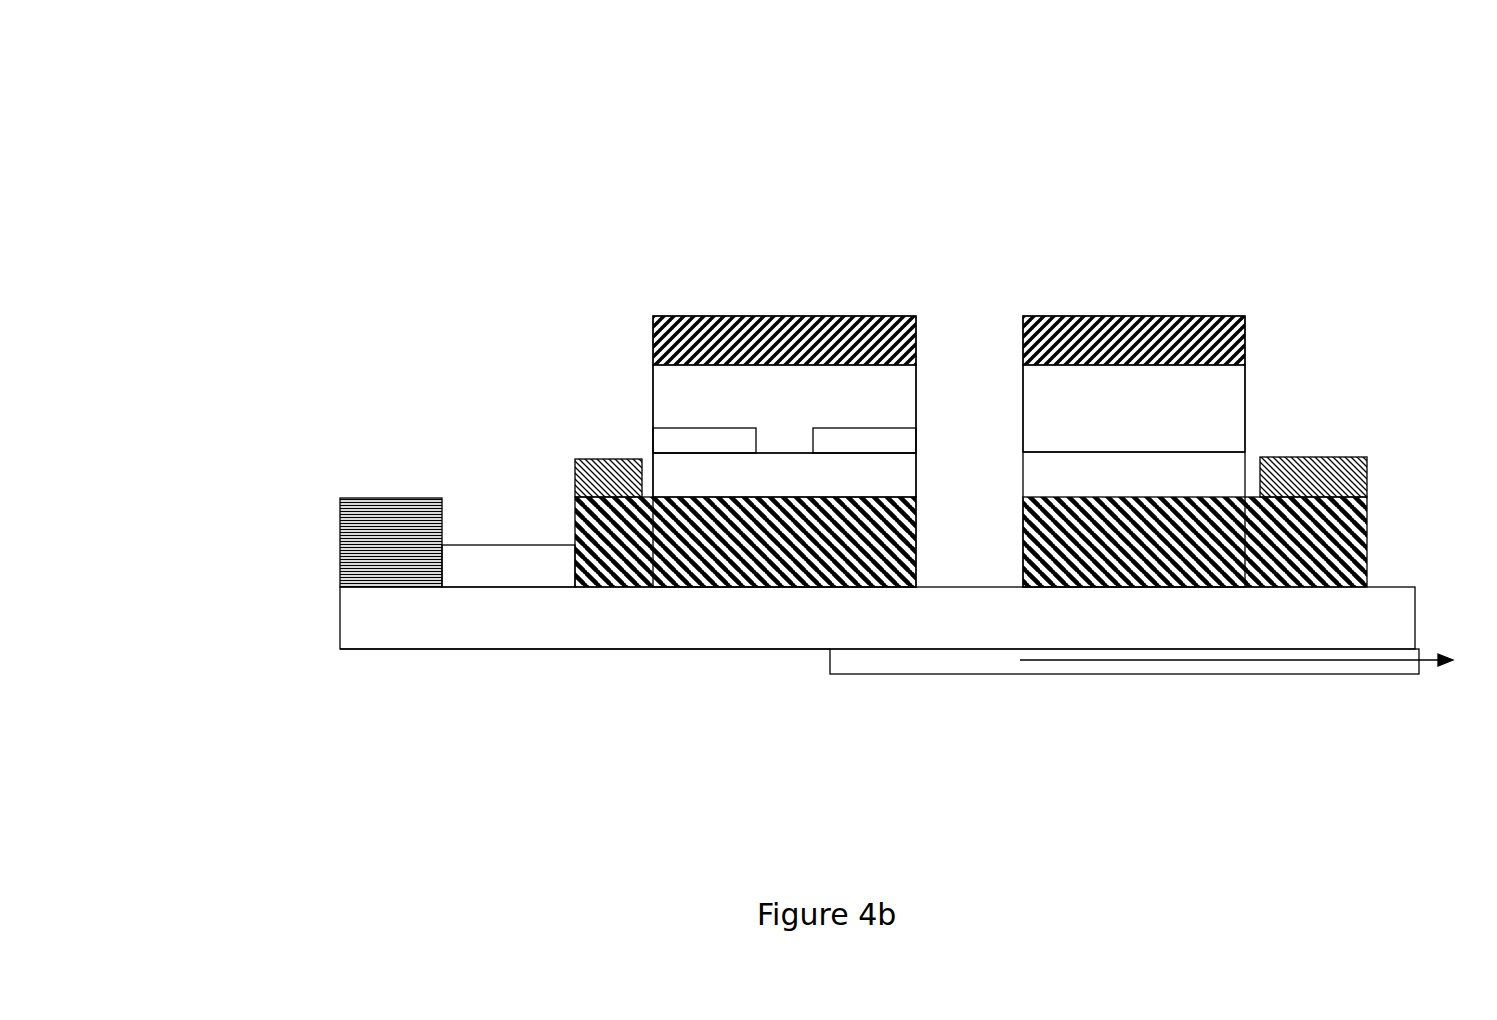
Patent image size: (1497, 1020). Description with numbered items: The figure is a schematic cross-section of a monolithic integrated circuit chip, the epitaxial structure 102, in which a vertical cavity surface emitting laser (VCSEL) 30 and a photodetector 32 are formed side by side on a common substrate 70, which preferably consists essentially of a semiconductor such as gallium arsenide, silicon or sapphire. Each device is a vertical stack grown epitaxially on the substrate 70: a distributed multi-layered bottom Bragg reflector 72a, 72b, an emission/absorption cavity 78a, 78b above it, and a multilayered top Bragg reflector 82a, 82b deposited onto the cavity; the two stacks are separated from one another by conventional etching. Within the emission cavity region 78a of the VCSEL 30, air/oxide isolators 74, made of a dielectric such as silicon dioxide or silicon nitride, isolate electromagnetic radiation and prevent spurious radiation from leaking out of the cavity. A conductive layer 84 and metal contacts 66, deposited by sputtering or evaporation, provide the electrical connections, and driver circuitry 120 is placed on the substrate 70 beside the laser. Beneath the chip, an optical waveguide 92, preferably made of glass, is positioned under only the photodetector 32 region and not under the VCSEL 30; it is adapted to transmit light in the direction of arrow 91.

The vertical cavity surface emitting laser (VCSEL) 30 is at (715, 173).
The photodetector 32 is at (1095, 163).
The contacts 66 is at (563, 463).
The substrate 70 is at (318, 645).
The bottom distributed Bragg reflector 72a is at (570, 530).
The bottom distributed Bragg reflector 72b is at (1373, 527).
The air/oxide isolators 74 is at (808, 442).
The emission cavity region 78a is at (644, 380).
The emission/absorption cavity 78b is at (1268, 392).
The top distributed Bragg reflector 82a is at (643, 317).
The top distributed Bragg reflector 82b is at (1177, 303).
The conductive layer 84 is at (648, 458).
The arrow 91 is at (1429, 674).
The optical waveguide 92 is at (1046, 675).
The epitaxial structure 102 is at (845, 778).
The driver circuitry 120 is at (327, 527).